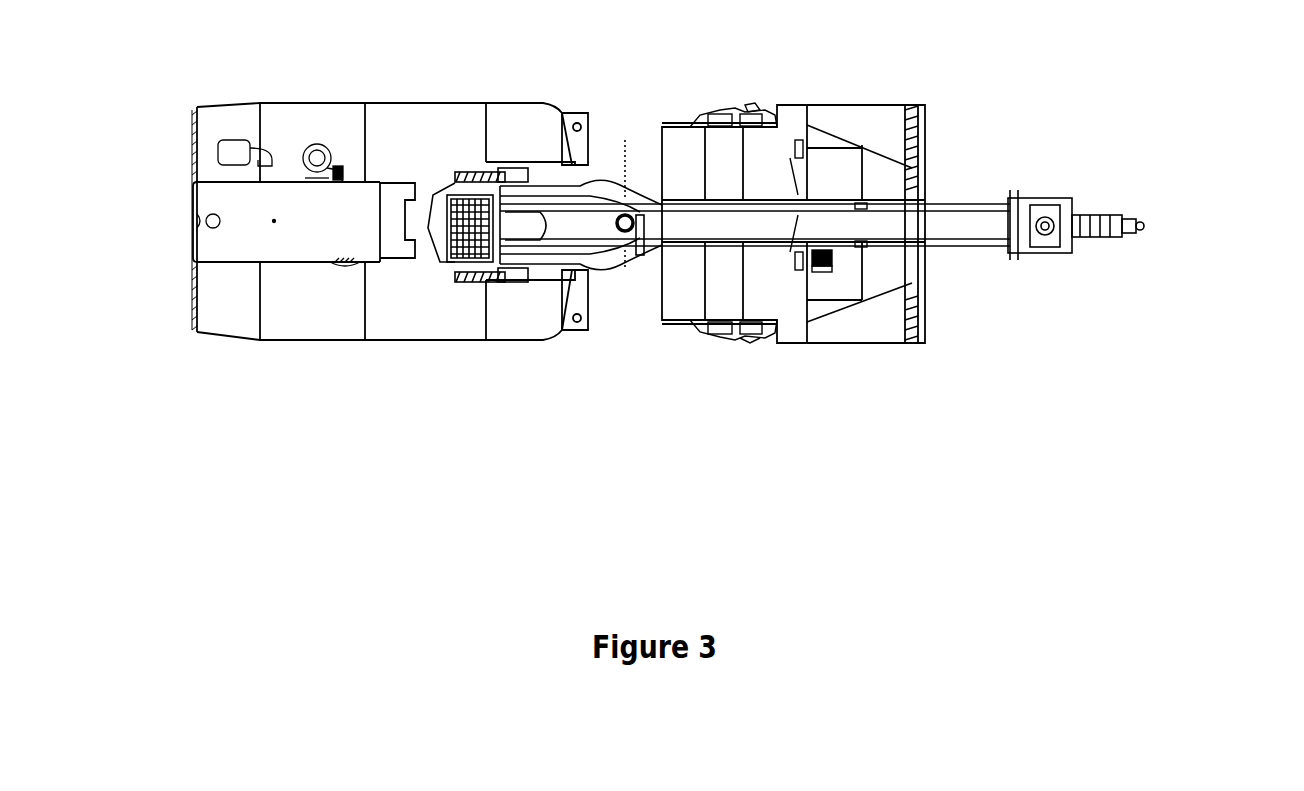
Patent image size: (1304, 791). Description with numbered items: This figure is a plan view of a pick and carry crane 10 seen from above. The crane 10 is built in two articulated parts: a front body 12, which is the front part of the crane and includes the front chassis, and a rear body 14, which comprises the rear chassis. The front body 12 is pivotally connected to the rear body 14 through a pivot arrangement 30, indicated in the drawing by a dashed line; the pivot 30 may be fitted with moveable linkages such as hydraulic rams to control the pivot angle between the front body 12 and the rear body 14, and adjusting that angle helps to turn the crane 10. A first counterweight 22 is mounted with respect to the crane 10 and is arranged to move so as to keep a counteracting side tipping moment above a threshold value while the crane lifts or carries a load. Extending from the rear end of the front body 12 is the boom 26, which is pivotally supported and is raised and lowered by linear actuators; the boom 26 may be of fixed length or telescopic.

The pick and carry crane 10 is at (1162, 150).
The front body 12 is at (897, 82).
The rear body 14 is at (268, 90).
The first counterweight 22 is at (531, 158).
The boom 26 is at (957, 180).
The pivot arrangement 30 is at (626, 255).